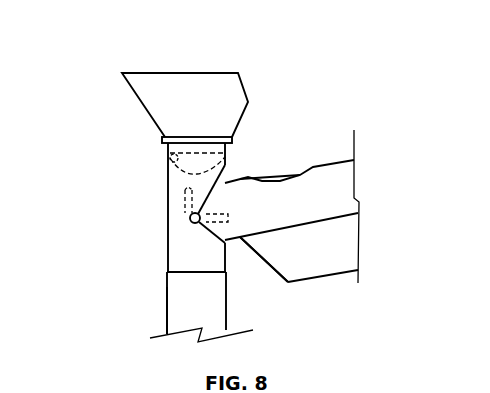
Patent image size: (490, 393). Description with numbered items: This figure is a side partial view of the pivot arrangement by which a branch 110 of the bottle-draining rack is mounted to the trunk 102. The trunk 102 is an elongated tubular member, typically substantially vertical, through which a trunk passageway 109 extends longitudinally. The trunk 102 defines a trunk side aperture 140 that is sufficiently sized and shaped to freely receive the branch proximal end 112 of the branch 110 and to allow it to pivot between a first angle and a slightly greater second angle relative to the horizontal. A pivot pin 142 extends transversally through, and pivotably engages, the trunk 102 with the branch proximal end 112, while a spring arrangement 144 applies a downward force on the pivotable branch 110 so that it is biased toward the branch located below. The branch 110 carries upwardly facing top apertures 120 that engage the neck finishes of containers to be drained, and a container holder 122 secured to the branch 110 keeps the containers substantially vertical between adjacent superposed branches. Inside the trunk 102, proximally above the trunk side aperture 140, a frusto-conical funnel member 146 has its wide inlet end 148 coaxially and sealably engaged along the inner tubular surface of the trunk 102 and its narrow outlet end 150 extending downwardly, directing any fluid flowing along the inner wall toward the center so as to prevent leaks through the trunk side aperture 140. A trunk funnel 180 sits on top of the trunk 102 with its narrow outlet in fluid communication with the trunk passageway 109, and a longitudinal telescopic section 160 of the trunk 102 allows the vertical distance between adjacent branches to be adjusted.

The trunk funnel 180 is at (170, 88).
The narrow outlet end 150 is at (236, 143).
The frusto-conical funnel member 146 is at (170, 160).
The wide inlet end 148 is at (168, 170).
The spring arrangement 144 is at (190, 216).
The trunk side aperture 140 is at (208, 197).
The branch proximal end 112 is at (240, 238).
The trunk passageway 109 is at (185, 236).
The branch 110 is at (356, 175).
The top apertures 120 is at (291, 178).
The container holder 122 is at (359, 240).
The pivot pin 142 is at (240, 237).
The longitudinal telescopic section 160 is at (226, 278).
The trunk 102 is at (167, 287).